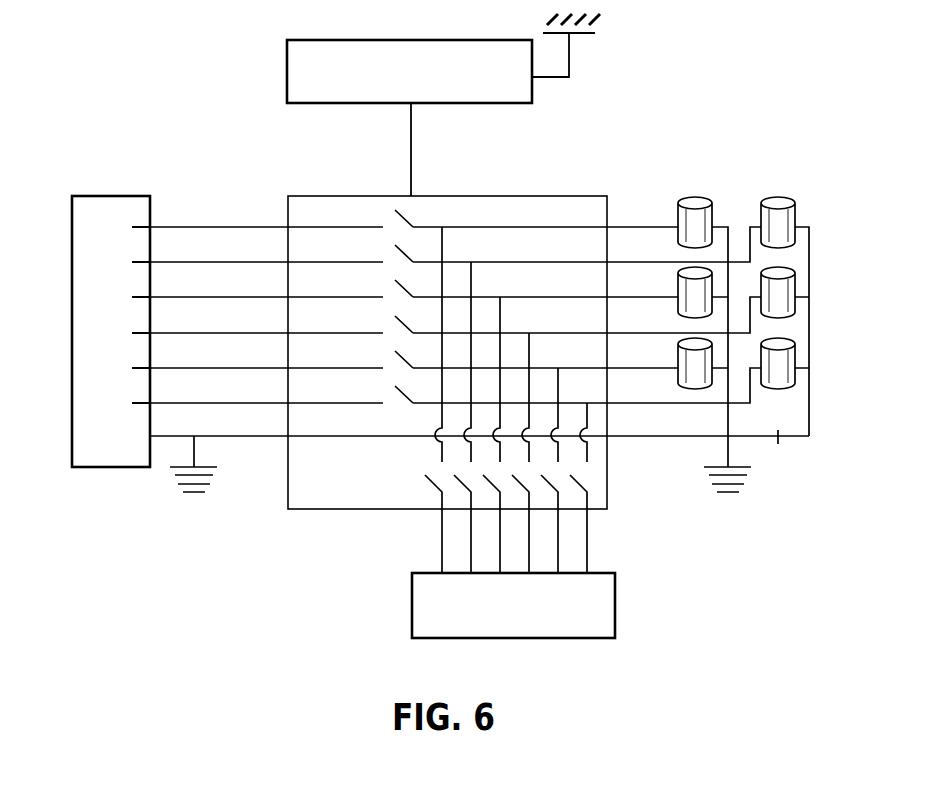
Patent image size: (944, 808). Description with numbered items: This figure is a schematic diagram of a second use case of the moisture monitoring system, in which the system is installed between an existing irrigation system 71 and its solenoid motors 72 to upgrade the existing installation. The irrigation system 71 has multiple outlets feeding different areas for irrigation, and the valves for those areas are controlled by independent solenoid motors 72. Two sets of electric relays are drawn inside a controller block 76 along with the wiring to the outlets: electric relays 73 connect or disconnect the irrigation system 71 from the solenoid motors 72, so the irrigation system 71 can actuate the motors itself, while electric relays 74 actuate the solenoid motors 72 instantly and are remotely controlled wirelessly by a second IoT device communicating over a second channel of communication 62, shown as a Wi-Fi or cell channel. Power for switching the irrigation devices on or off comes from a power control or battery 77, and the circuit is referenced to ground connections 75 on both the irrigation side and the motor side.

The second channel of communication 62 is at (287, 74).
The irrigation system 71 is at (113, 195).
The solenoid motors 72 is at (797, 234).
The electric relays 73 is at (423, 225).
The electric relays 74 is at (585, 483).
The ground 75 is at (195, 497).
The controller box 76 is at (342, 509).
The power control or battery 77 is at (616, 605).